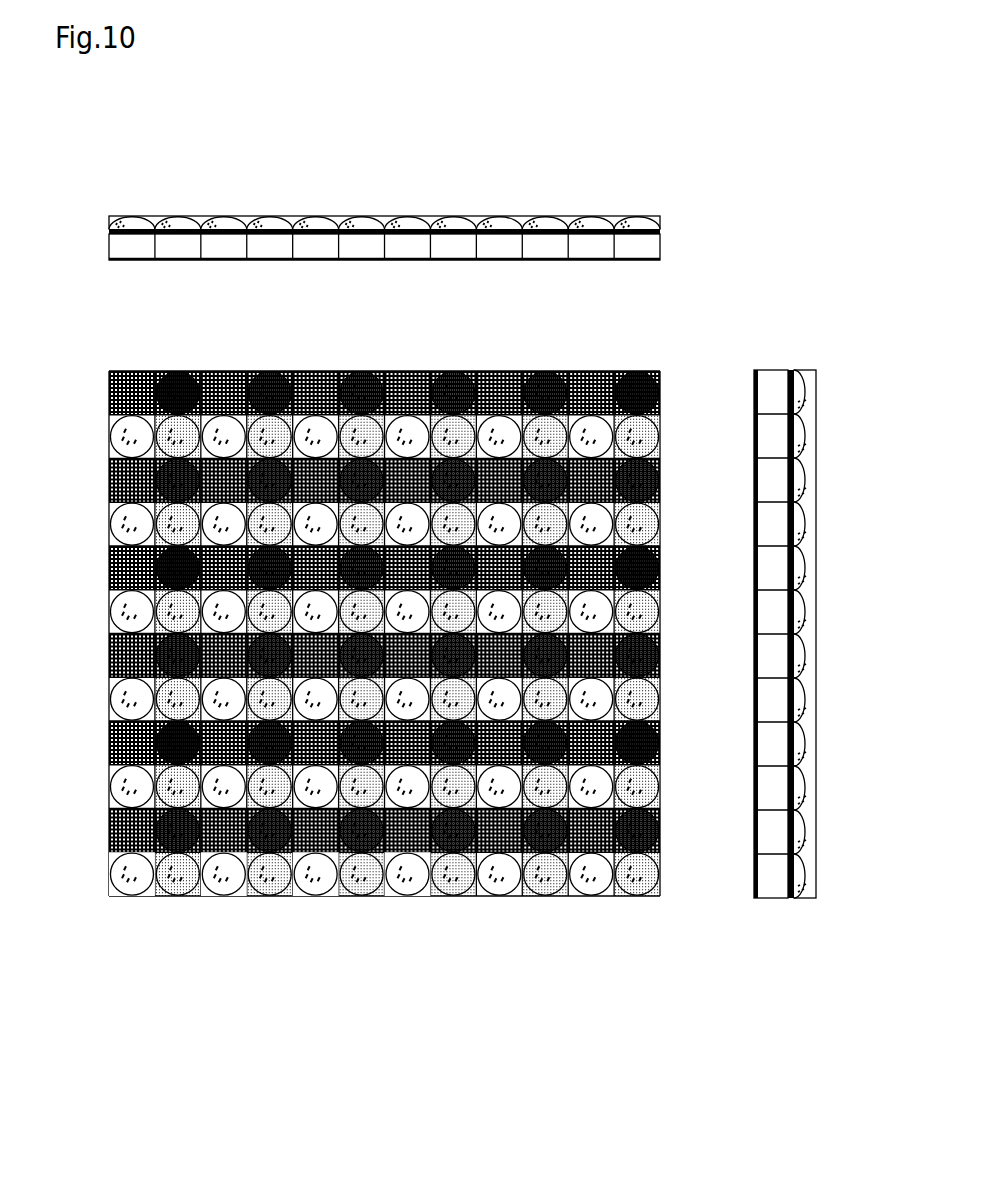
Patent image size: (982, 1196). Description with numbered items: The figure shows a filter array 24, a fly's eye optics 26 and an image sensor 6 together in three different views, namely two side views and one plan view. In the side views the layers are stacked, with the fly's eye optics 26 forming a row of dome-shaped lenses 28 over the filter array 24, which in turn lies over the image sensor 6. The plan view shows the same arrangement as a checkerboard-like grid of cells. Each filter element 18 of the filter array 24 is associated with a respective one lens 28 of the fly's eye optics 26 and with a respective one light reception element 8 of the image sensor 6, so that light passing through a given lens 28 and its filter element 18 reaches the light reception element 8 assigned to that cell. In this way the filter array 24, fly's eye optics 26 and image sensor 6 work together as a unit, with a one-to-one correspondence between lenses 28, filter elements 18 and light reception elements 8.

The image sensor 6 is at (709, 366).
The light reception element 8 is at (492, 898).
The filter element 18 is at (157, 896).
The filter array 24 is at (706, 282).
The fly's eye optics 26 is at (716, 320).
The lens 28 is at (141, 888).